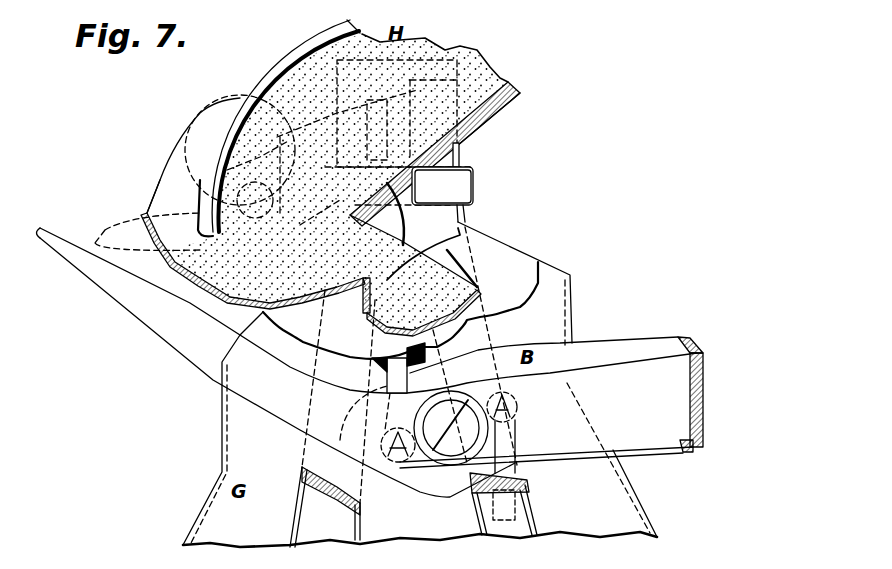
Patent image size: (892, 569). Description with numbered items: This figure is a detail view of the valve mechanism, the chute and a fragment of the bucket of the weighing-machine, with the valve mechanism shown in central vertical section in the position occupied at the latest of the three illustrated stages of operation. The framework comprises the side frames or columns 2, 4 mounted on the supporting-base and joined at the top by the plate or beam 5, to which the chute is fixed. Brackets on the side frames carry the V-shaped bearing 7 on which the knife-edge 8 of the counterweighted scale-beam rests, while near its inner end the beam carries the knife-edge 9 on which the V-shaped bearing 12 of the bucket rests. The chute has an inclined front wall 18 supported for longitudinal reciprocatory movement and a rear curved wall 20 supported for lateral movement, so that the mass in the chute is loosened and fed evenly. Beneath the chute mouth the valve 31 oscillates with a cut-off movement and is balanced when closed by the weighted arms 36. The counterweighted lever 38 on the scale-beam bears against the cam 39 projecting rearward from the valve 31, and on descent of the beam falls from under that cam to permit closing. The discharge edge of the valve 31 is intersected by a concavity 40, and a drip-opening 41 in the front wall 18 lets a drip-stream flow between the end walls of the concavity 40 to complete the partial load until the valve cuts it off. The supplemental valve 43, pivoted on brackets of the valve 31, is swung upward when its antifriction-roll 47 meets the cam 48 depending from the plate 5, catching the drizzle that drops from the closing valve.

The side frame or column 2 is at (325, 507).
The side frame or column 4 is at (466, 219).
The plate or beam 5 is at (460, 157).
The V-shaped bearing 7 is at (517, 437).
The pivot or knife-edge 8 is at (517, 407).
The pivot or knife-edge 9 is at (383, 445).
The V-shaped bearing 12 is at (387, 375).
The front wall 18 is at (487, 117).
The rear curved wall 20 is at (278, 83).
The valve 31 is at (213, 294).
The weighted arms 36 is at (205, 120).
The counterweighted lever 38 is at (150, 327).
The cam 39 is at (107, 229).
The depression or concavity 40 is at (373, 316).
The drip-opening 41 is at (395, 237).
The supplemental valve 43 is at (470, 302).
The antifriction-roll 47 is at (363, 303).
The cam 48 is at (400, 210).